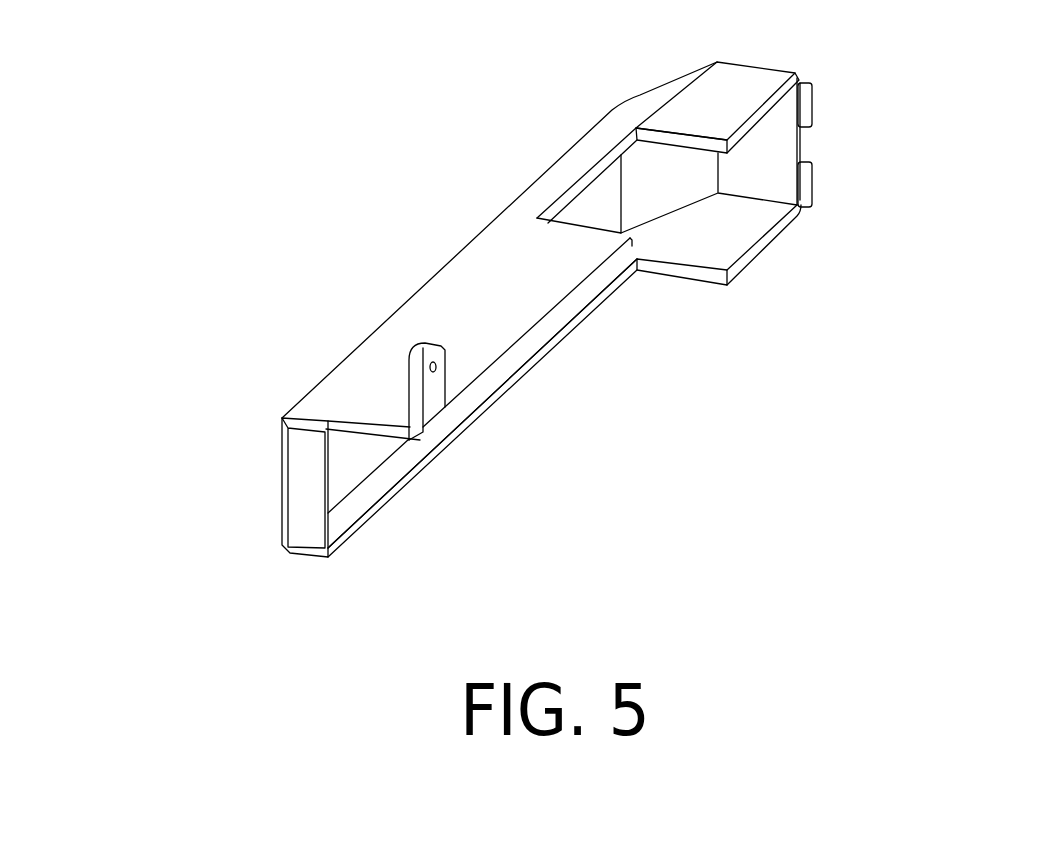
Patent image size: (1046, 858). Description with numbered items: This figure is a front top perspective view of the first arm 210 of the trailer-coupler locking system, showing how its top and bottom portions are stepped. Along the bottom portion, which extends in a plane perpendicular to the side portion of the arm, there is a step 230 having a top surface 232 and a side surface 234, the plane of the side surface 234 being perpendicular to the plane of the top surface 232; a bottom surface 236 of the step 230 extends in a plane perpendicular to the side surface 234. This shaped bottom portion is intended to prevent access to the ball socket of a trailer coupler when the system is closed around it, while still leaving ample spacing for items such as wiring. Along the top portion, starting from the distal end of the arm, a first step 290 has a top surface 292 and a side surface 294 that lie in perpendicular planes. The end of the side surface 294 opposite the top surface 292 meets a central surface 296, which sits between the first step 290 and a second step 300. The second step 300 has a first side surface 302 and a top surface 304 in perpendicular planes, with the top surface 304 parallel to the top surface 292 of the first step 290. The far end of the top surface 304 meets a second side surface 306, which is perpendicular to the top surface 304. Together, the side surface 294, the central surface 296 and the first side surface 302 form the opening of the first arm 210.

The first arm 210 is at (467, 296).
The step 230 is at (641, 186).
The top surface 232 is at (792, 237).
The side surface 234 is at (692, 296).
The bottom surface 236 is at (430, 480).
The first step 290 is at (744, 76).
The top surface 292 is at (776, 124).
The side surface 294 is at (698, 126).
The central surface 296 is at (581, 168).
The second step 300 is at (460, 328).
The first side surface 302 is at (564, 232).
The top surface 304 is at (540, 352).
The second side surface 306 is at (368, 444).